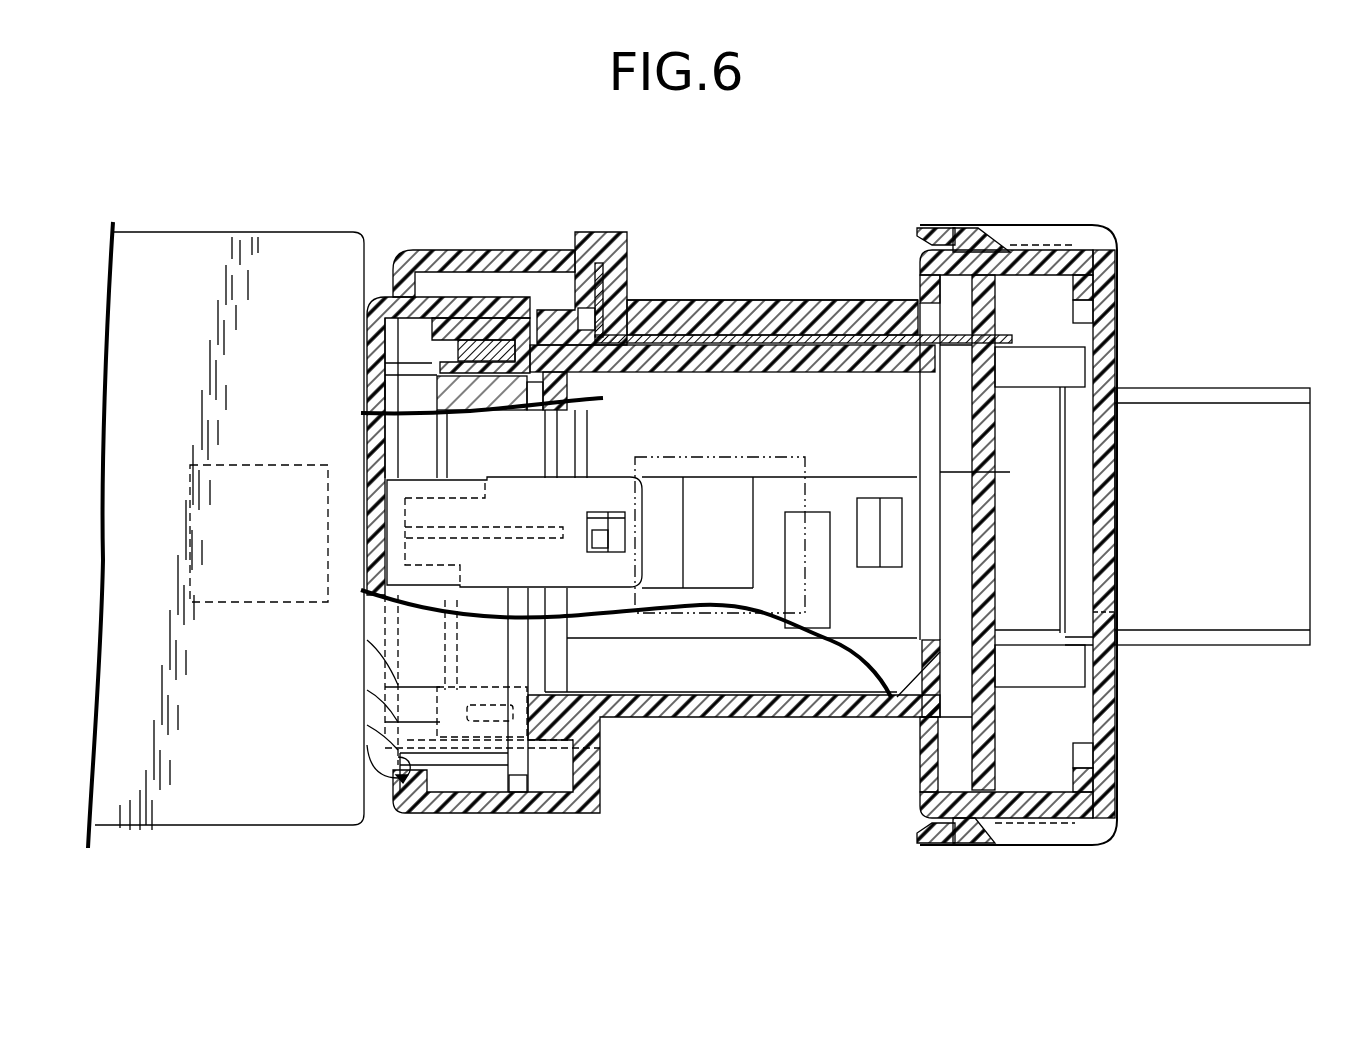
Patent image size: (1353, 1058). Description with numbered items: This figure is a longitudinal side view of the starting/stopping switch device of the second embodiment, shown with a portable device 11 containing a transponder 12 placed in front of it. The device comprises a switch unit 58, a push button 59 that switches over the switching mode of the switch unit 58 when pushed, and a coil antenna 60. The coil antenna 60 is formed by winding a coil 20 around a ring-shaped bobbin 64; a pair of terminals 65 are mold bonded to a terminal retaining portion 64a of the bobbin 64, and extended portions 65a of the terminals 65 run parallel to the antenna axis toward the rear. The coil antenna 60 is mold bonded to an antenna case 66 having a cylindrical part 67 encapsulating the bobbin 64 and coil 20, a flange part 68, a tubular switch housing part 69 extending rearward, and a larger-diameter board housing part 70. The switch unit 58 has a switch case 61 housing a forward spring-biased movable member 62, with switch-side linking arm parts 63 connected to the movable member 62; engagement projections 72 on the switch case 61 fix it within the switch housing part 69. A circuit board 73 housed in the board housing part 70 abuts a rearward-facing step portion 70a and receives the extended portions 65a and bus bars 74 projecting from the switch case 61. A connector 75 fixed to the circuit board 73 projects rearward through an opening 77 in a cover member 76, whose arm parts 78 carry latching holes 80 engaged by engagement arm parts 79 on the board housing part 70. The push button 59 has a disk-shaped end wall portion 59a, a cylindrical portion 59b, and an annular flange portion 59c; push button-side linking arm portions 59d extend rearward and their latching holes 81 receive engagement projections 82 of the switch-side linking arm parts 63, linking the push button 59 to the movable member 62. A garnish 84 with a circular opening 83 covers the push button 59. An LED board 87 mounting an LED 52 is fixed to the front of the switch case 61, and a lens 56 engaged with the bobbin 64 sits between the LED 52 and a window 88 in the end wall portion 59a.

The portable device 11 is at (172, 258).
The transponder 12 is at (272, 462).
The coil 20 is at (485, 342).
The LED 52 is at (537, 400).
The lens 56 is at (440, 398).
The switch unit 58 is at (707, 705).
The push button 59 is at (382, 297).
The end wall portion 59a is at (385, 665).
The cylindrical portion 59b is at (457, 767).
The annular flange portion 59c is at (518, 783).
The push button-side linking arm portion 59d is at (553, 493).
The coil antenna 60 is at (385, 330).
The switch case 61 is at (792, 680).
The movable member 62 is at (808, 462).
The switch-side linking arm part 63 is at (462, 496).
The bobbin 64 is at (432, 363).
The terminal retaining portion 64a is at (683, 372).
The terminal 65 is at (627, 262).
The extended portion 65a is at (758, 336).
The antenna case 66 is at (712, 290).
The cylindrical part 67 is at (492, 322).
The flange part 68 is at (592, 230).
The switch housing part 69 is at (817, 300).
The board housing part 70 is at (1028, 252).
The step portion 70a is at (985, 778).
The engagement projection 72 is at (895, 532).
The circuit board 73 is at (985, 705).
The bus bar 74 is at (1012, 470).
The connector 75 is at (1192, 388).
The cover member 76 is at (1110, 690).
The opening 77 is at (1100, 630).
The arm part 78 is at (930, 228).
The engagement arm part 79 is at (975, 228).
The latching hole 80 is at (1078, 225).
The latching hole 81 is at (625, 525).
The engagement projection 82 is at (600, 540).
The circular opening 83 is at (400, 755).
The garnish 84 is at (412, 250).
The LED board 87 is at (558, 348).
The window 88 is at (383, 390).